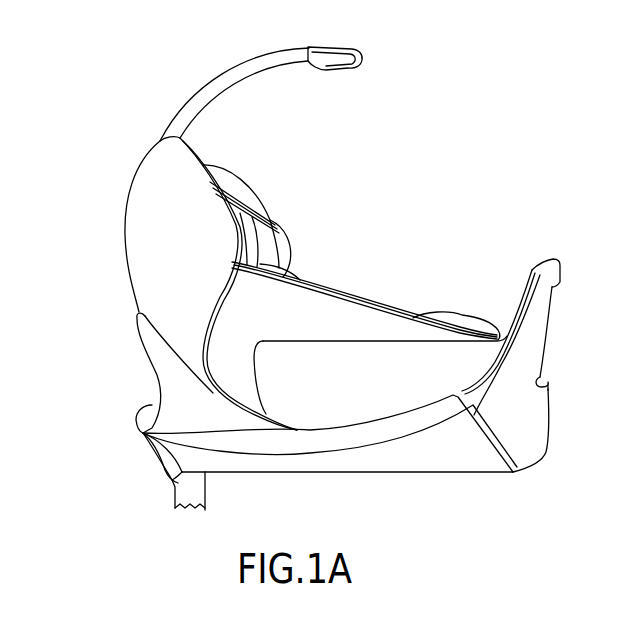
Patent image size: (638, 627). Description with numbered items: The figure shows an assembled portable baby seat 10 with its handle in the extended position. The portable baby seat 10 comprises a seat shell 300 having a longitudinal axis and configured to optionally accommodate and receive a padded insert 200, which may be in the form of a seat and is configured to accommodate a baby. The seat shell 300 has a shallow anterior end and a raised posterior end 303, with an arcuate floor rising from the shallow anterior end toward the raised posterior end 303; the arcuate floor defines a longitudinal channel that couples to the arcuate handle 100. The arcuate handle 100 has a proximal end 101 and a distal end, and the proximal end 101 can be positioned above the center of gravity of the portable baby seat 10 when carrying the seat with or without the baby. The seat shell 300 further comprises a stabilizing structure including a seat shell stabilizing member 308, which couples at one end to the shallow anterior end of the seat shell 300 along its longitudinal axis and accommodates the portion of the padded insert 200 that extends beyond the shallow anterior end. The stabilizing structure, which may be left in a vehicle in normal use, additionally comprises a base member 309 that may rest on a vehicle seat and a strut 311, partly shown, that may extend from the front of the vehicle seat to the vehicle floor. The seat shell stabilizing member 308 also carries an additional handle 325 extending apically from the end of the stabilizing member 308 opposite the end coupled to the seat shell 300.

The portable baby seat 10 is at (140, 73).
The arcuate handle 100 is at (247, 62).
The proximal end 101 is at (362, 57).
The padded insert 200 is at (270, 240).
The seat shell 300 is at (160, 252).
The raised posterior end 303 is at (173, 395).
The seat shell stabilizing member 308 is at (508, 422).
The base member 309 is at (390, 457).
The strut 311 is at (182, 500).
The additional handle 325 is at (553, 260).